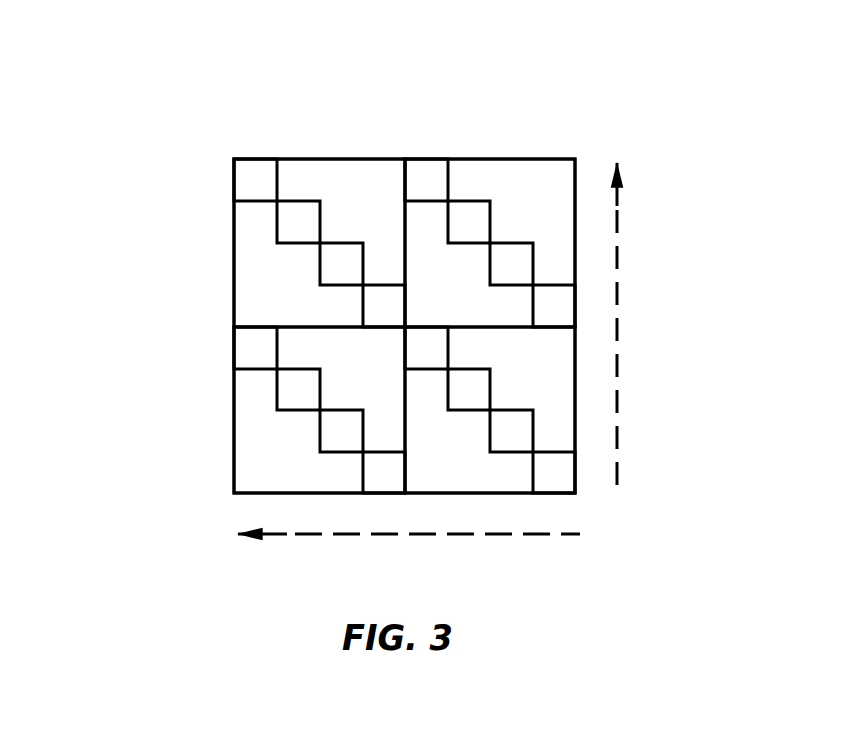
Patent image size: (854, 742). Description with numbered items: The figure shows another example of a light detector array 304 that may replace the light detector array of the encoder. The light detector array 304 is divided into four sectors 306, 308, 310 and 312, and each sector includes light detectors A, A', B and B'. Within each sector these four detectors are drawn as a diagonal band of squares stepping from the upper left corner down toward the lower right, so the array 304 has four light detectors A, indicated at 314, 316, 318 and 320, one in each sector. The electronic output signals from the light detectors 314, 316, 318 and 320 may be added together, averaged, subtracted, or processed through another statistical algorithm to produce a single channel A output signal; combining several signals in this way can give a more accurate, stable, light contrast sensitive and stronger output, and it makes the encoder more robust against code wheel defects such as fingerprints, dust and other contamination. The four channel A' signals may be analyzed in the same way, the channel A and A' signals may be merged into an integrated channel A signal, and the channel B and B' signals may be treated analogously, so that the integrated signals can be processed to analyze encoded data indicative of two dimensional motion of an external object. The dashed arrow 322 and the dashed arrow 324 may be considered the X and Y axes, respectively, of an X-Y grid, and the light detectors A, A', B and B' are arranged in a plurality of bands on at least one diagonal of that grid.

The light detector array 304 is at (416, 282).
The sector 306 is at (319, 212).
The sector 308 is at (490, 214).
The sector 310 is at (286, 410).
The sector 312 is at (577, 432).
The light detector A 314 is at (258, 146).
The light detector A 316 is at (428, 151).
The light detector A 318 is at (227, 347).
The light detector A 320 is at (429, 376).
The arrow 322 is at (452, 559).
The arrow 324 is at (642, 347).